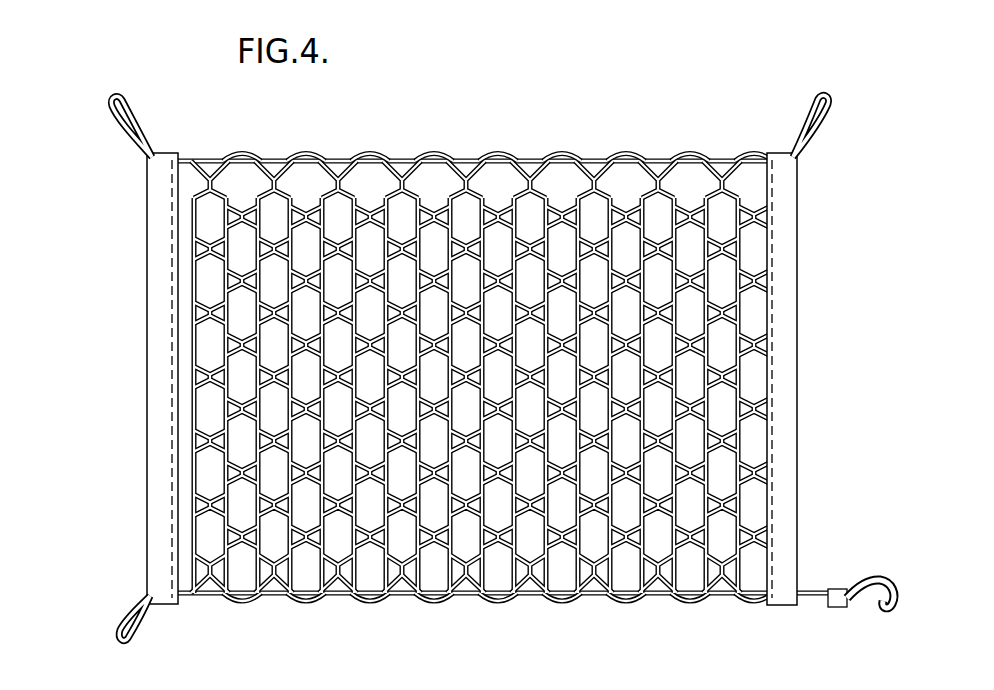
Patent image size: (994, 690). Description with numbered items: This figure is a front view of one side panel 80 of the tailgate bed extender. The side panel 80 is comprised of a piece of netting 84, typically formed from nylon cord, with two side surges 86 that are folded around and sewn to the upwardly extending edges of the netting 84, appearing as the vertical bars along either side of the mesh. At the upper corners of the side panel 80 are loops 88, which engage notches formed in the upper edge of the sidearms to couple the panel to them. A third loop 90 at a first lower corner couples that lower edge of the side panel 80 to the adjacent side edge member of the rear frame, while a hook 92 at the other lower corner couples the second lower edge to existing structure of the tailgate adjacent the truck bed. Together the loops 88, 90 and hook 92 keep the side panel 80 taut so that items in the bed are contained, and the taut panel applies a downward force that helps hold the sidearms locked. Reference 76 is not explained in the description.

The cargo net 76 is at (491, 376).
The side panel 80 is at (188, 428).
The netting 84 is at (687, 397).
The side surges 86 is at (165, 298).
The loops 88 is at (131, 120).
The third loop 90 is at (127, 642).
The hook 92 is at (847, 604).